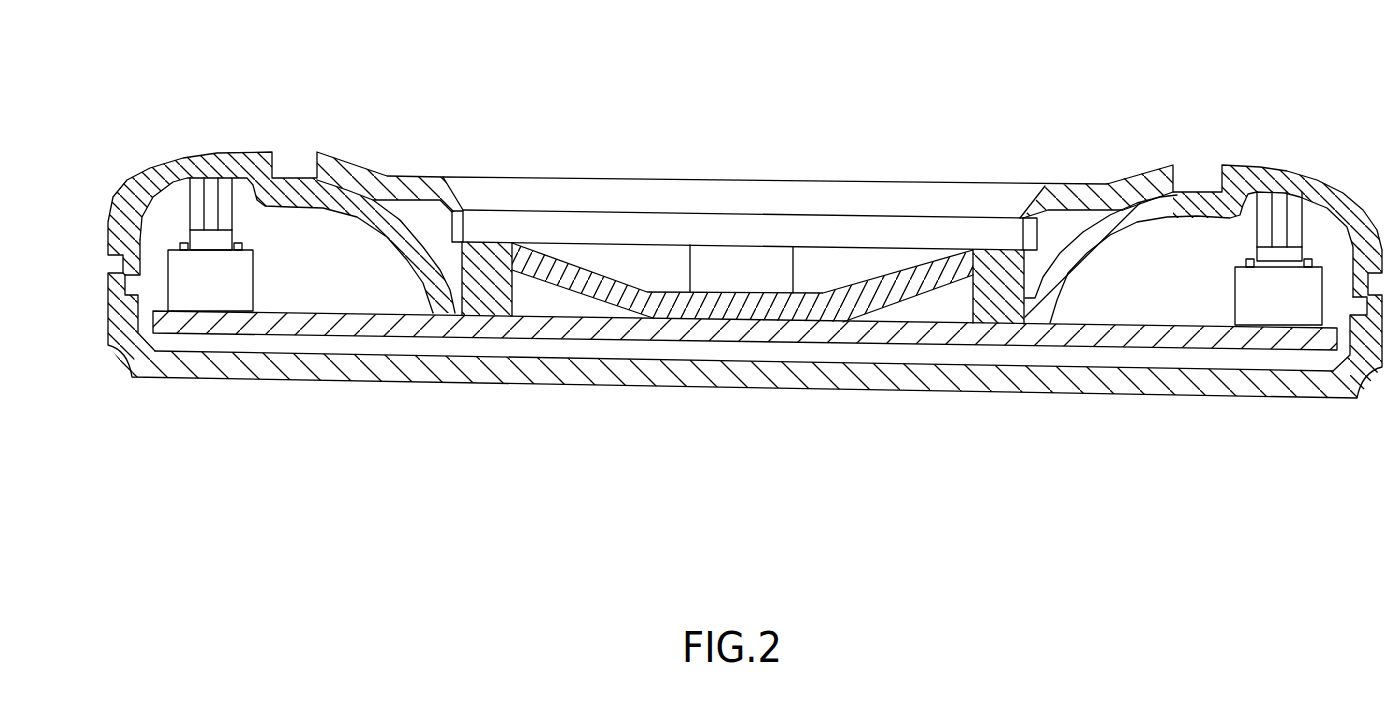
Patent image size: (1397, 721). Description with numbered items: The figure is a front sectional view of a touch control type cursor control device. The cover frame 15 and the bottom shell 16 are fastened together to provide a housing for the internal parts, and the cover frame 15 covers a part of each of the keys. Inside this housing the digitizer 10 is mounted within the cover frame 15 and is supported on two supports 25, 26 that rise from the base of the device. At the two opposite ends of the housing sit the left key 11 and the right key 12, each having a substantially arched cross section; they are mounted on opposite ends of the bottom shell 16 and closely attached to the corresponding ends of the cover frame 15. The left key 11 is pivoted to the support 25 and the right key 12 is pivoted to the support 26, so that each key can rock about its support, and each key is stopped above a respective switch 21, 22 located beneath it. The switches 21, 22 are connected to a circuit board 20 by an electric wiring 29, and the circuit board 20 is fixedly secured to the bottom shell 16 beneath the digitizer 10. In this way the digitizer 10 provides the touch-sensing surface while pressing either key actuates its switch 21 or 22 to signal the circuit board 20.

The digitizer 10 is at (628, 232).
The left key 11 is at (197, 197).
The right key 12 is at (1297, 215).
The cover frame 15 is at (1125, 177).
The bottom shell 16 is at (930, 378).
The circuit board 20 is at (512, 325).
The switch 21 is at (212, 285).
The switch 22 is at (1278, 302).
The support 25 is at (485, 285).
The support 26 is at (1005, 282).
The electric wiring 29 is at (742, 268).